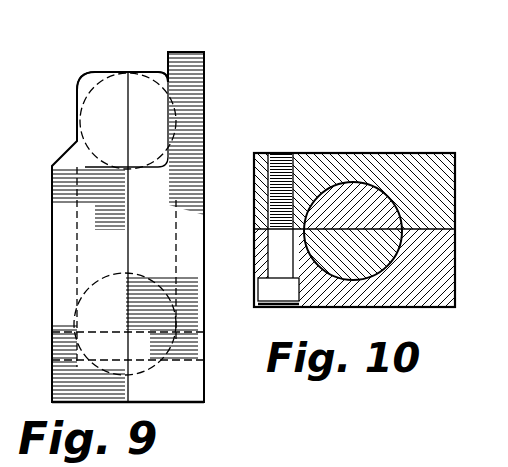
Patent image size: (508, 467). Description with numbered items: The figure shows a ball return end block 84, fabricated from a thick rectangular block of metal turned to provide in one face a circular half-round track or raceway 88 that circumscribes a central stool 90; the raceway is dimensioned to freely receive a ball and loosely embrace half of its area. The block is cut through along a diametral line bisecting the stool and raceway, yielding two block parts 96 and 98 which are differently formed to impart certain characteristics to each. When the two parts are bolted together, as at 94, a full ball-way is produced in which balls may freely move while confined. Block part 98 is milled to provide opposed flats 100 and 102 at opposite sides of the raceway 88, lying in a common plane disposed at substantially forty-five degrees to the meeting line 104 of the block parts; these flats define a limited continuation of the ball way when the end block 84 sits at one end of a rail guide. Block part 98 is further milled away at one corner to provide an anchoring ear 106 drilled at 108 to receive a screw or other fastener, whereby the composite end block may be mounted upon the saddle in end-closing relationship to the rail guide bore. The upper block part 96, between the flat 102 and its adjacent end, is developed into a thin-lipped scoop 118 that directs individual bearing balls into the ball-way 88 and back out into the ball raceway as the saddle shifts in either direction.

In FIG. 9, the block body 84 is at (202, 393).
In FIG. 10, the block body 84 is at (430, 308).
In FIG. 9, the raceway 88 is at (178, 250).
In FIG. 10, the raceway 88 is at (354, 192).
In FIG. 9, the central stool 90 is at (119, 245).
In FIG. 10, the bolt 94 is at (275, 261).
In FIG. 9, the upper block part 96 is at (50, 378).
In FIG. 10, the upper block part 96 is at (296, 308).
In FIG. 9, the block part 98 is at (188, 375).
In FIG. 10, the block part 98 is at (406, 153).
In FIG. 9, the flat 100 is at (163, 71).
In FIG. 9, the flat 102 is at (70, 149).
In FIG. 9, the meeting line 104 is at (128, 73).
In FIG. 9, the anchoring ear 106 is at (166, 55).
In FIG. 9, the drilled hole 108 is at (206, 88).
In FIG. 9, the thin-lipped scoop 118 is at (92, 82).